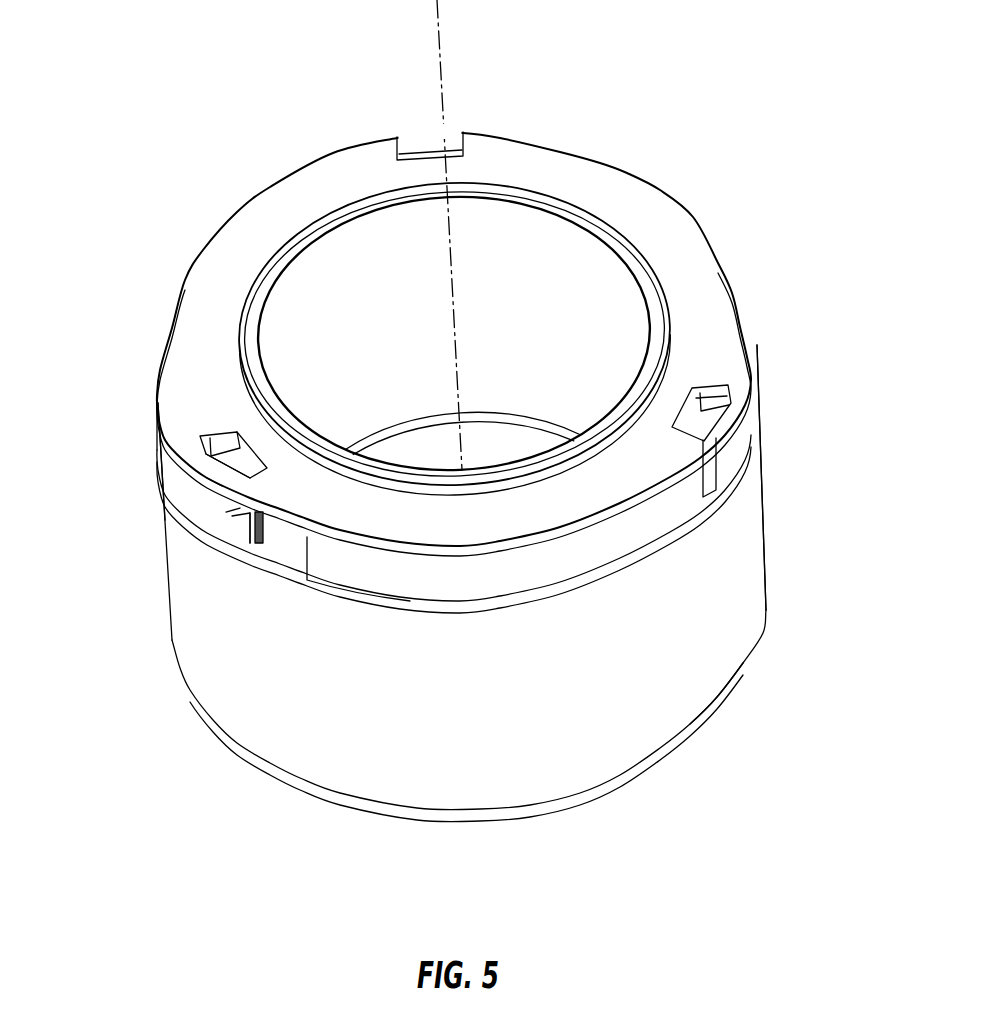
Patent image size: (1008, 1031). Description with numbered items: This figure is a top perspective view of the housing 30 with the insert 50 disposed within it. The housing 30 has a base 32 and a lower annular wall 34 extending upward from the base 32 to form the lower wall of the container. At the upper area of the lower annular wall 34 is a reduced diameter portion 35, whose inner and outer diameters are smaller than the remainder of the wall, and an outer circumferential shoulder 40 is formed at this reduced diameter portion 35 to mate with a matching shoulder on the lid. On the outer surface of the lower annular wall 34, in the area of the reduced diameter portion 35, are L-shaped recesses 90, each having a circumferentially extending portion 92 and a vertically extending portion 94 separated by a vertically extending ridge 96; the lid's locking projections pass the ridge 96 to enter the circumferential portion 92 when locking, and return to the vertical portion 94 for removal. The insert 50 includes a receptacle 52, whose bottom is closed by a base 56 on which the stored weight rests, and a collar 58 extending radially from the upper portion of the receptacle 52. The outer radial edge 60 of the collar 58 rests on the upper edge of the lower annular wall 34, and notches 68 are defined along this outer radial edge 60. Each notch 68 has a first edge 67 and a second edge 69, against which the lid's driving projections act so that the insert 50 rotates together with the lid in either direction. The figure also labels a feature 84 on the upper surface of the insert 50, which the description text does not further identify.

The housing 30 is at (753, 553).
The base 32 is at (412, 816).
The lower annular wall 34 is at (753, 617).
The reduced diameter portion 35 is at (608, 543).
The outer circumferential shoulder 40 is at (157, 407).
The insert 50 is at (658, 212).
The receptacle 52 is at (512, 248).
The base 56 is at (522, 440).
The collar 58 is at (603, 170).
The outer radial edge 60 is at (722, 258).
The first edge 67 is at (236, 432).
The notch 68 is at (240, 452).
The second edge 69 is at (207, 480).
The raised ring 84 is at (352, 265).
The L-shaped recess 90 is at (727, 440).
The circumferentially extending portion 92 is at (233, 515).
The vertically extending portion 94 is at (297, 553).
The ridge 96 is at (260, 540).